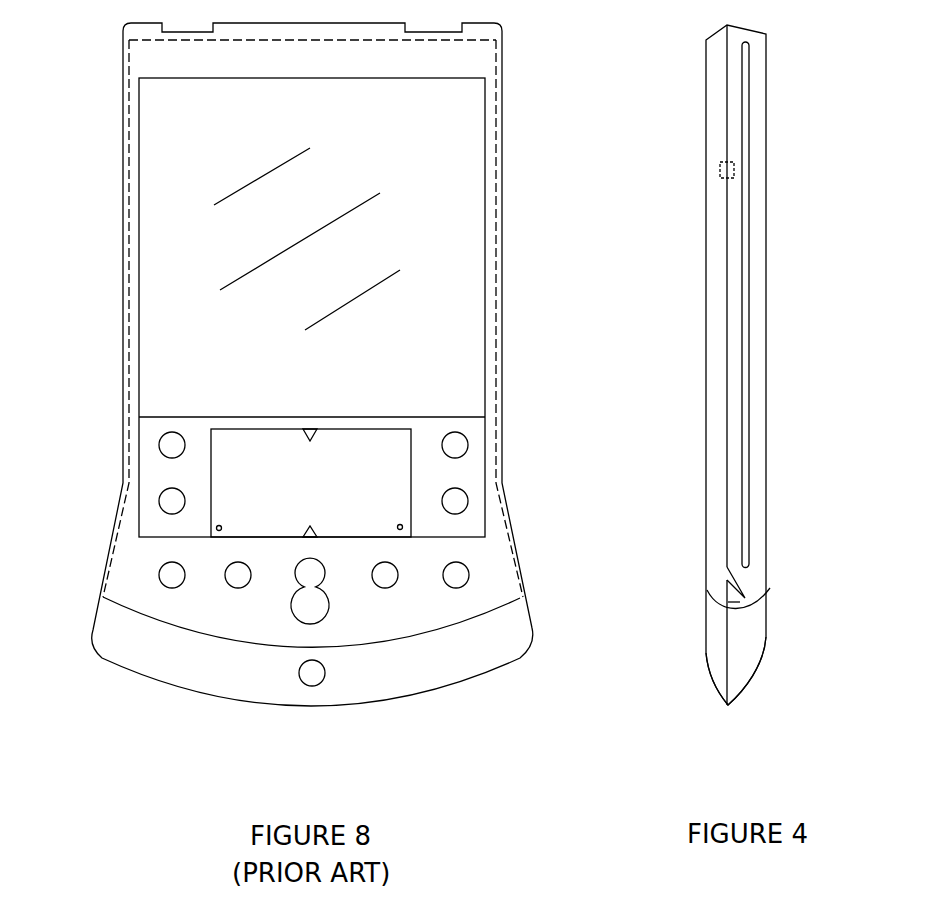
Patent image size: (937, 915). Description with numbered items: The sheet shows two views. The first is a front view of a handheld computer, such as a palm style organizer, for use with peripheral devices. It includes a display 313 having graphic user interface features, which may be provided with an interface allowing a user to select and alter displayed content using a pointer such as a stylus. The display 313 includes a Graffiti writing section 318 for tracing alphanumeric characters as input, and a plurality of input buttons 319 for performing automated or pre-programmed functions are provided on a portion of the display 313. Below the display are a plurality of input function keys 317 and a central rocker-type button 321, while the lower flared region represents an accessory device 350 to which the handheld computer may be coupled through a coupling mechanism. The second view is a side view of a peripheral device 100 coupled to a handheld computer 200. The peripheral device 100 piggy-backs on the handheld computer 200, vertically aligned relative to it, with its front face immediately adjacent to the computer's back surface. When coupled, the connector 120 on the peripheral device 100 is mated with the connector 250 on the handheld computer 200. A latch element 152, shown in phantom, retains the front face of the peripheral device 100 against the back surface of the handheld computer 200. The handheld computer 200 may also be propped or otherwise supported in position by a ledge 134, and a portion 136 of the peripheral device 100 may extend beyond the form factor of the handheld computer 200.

In FIG. 8, the display 313 is at (432, 152).
In FIG. 8, the Graffiti writing section 318 is at (397, 470).
In FIG. 8, the input buttons 319 is at (172, 500).
In FIG. 8, the input function keys 317 is at (172, 577).
In FIG. 8, the scroll button 321 is at (308, 602).
In FIG. 8, the accessory device 350 is at (422, 658).
In FIG. 4, the peripheral device 100 is at (688, 170).
In FIG. 4, the handheld computer 200 is at (790, 368).
In FIG. 4, the latch element 152 is at (735, 167).
In FIG. 4, the connector 250 is at (740, 584).
In FIG. 4, the ledge 134 is at (770, 588).
In FIG. 4, the connector 120 is at (735, 602).
In FIG. 4, the portion 136 is at (747, 652).